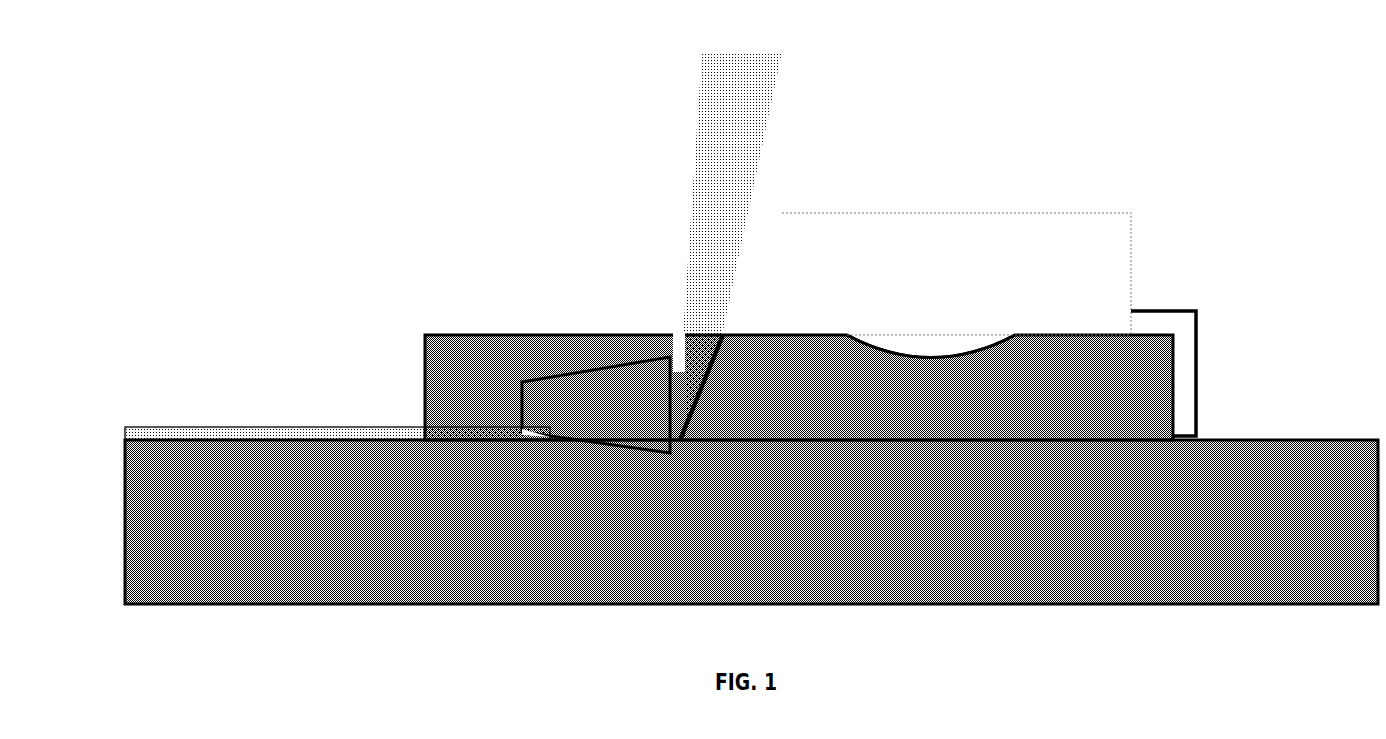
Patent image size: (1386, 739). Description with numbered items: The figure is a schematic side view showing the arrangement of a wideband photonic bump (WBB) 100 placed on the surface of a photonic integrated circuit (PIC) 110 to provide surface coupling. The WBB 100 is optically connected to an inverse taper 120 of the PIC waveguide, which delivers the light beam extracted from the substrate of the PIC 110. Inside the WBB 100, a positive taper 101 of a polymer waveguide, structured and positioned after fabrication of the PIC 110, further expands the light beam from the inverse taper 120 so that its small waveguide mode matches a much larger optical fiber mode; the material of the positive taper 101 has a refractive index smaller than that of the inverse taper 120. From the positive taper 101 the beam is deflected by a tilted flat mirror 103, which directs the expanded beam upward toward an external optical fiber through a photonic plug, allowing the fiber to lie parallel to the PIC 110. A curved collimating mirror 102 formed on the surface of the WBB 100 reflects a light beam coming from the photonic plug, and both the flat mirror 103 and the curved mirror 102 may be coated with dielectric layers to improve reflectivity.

The wideband photonic bump (WBB) 100 is at (533, 348).
The positive taper 101 is at (642, 358).
The curved mirror 102 is at (976, 340).
The tilted flat mirror 103 is at (720, 360).
The photonic integrated circuit (PIC) 110 is at (515, 584).
The inverse taper 120 is at (255, 425).